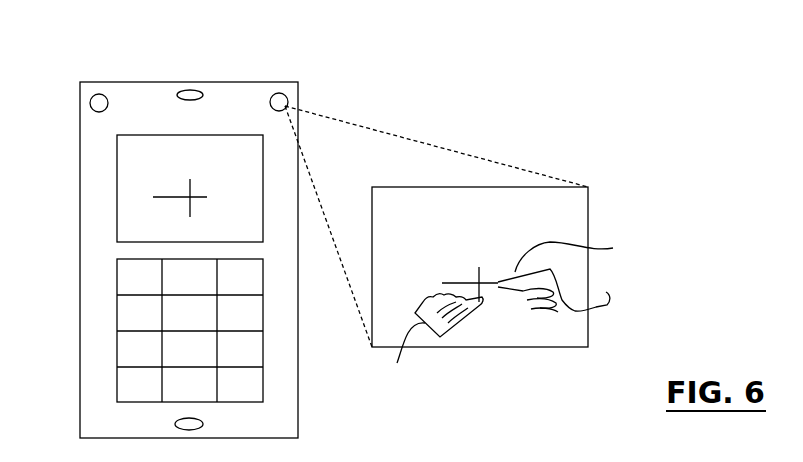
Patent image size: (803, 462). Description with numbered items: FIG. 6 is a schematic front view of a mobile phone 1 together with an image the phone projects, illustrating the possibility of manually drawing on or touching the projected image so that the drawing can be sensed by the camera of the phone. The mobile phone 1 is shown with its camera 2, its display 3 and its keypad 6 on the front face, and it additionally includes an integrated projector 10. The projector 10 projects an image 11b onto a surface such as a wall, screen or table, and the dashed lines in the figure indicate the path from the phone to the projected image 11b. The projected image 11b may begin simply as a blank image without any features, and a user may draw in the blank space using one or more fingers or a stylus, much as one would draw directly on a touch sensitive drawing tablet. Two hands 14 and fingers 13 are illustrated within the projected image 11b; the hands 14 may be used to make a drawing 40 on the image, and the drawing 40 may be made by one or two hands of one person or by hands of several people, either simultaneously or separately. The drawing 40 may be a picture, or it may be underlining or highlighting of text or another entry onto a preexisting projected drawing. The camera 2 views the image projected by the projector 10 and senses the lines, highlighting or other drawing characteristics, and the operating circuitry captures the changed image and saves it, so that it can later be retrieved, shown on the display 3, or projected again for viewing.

The mobile phone 1 is at (182, 38).
The camera 2 is at (93, 90).
The display 3 is at (133, 172).
The keypad 6 is at (132, 308).
The projector 10 is at (286, 98).
The projected image 11b is at (502, 163).
The drawing 40 is at (570, 214).
The finger 13 is at (462, 385).
The hand 14 is at (495, 326).